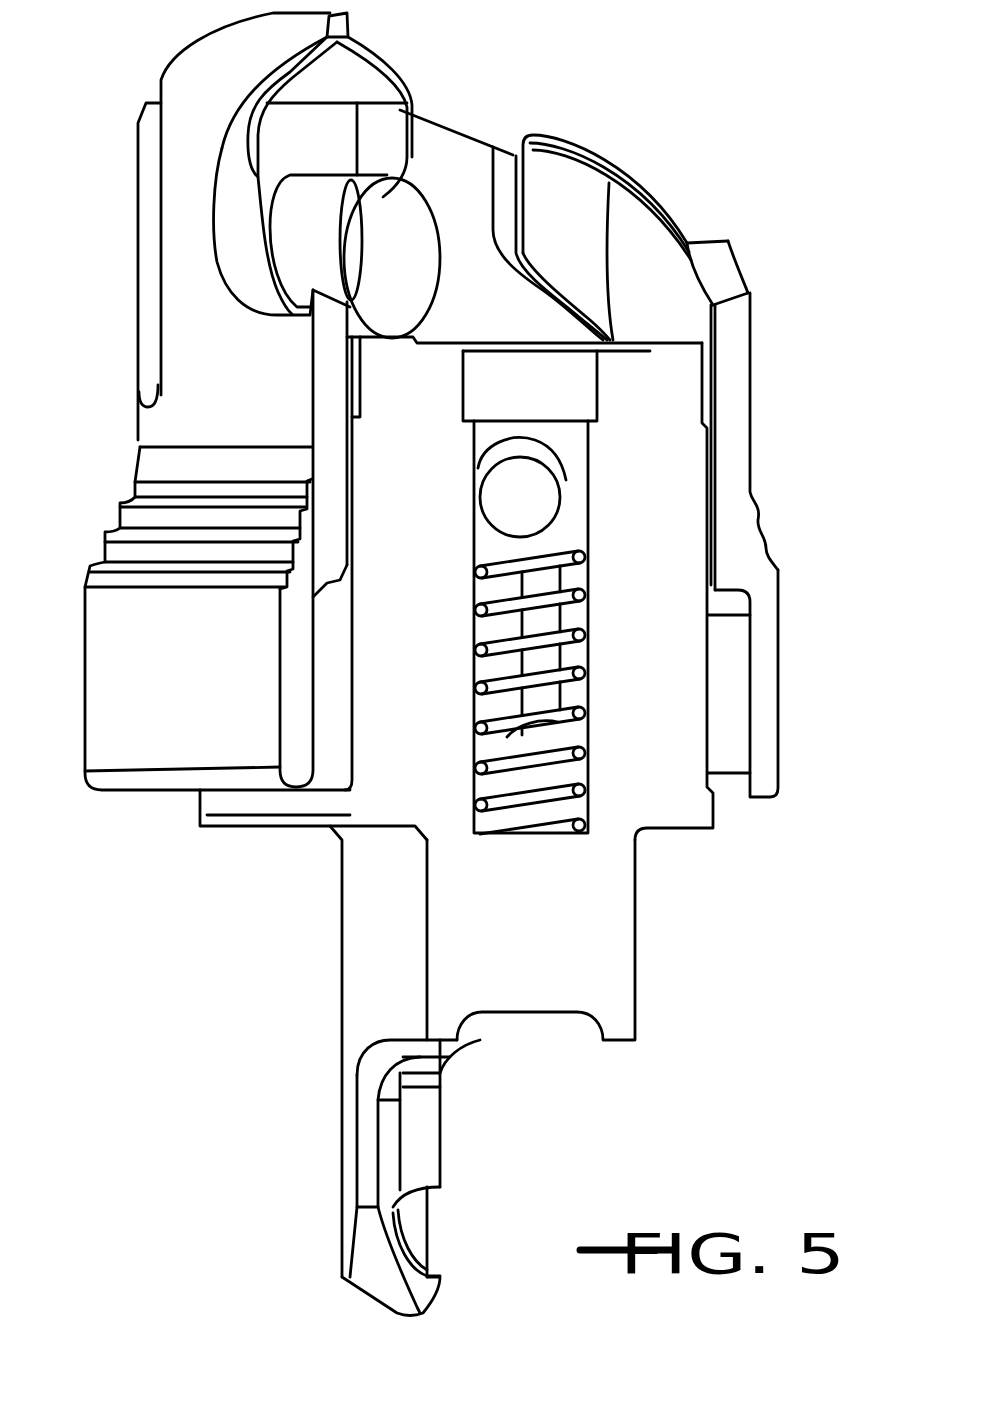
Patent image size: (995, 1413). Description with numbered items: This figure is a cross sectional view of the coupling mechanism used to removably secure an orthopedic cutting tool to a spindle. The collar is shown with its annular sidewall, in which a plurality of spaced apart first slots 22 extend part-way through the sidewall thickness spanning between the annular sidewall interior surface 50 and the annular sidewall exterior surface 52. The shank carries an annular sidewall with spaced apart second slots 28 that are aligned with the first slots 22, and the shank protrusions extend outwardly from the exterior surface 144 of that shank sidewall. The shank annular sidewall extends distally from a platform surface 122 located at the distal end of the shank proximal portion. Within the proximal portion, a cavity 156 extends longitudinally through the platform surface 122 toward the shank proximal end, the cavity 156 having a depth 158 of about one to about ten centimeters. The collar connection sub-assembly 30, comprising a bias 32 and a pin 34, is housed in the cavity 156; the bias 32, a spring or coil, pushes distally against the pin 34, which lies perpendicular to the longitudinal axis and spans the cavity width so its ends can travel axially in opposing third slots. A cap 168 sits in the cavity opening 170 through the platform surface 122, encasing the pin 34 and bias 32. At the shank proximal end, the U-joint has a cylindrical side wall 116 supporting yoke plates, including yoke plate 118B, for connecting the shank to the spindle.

The first slots 22 is at (245, 200).
The second slots 28 is at (320, 258).
The annular sidewall exterior surface 52 is at (222, 320).
The cap 168 is at (520, 397).
The cavity opening 170 is at (608, 212).
The annular sidewall interior surface 50 is at (648, 244).
The platform surface 122 is at (677, 336).
The bias 32 is at (586, 677).
The pin 34 is at (512, 499).
The collar connection sub-assembly 30 is at (578, 480).
The depth 158 is at (657, 356).
The cavity 156 is at (590, 610).
The cylindrical side wall 116 is at (365, 949).
The exterior surface 144 is at (607, 933).
The yoke plate 118B is at (365, 1177).